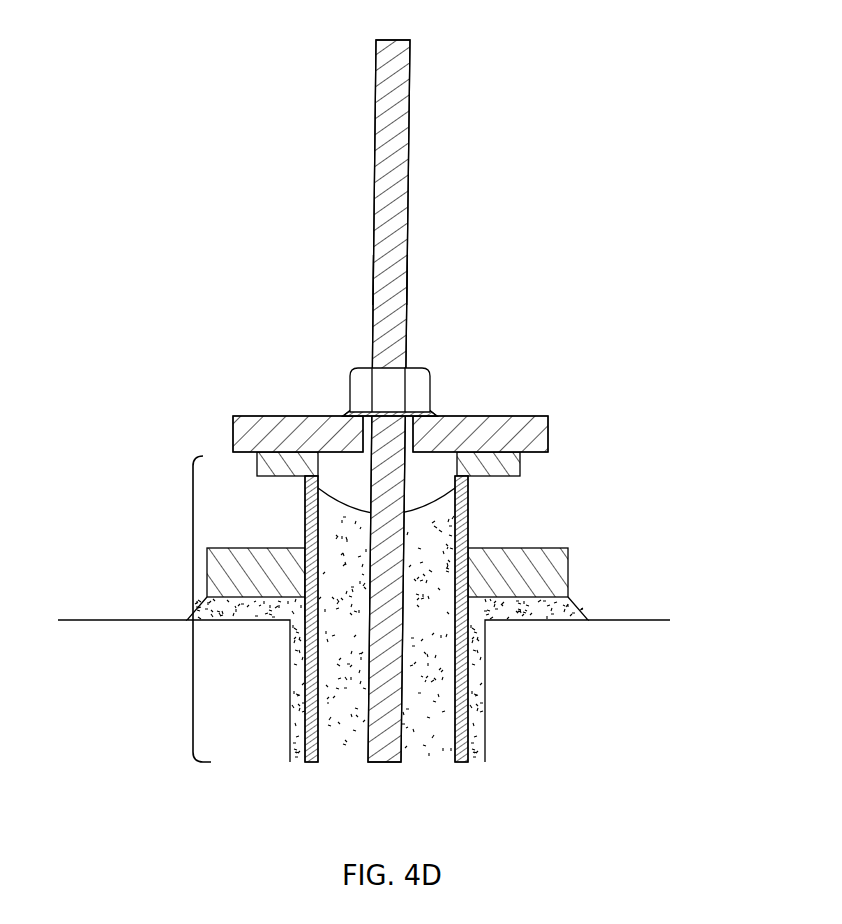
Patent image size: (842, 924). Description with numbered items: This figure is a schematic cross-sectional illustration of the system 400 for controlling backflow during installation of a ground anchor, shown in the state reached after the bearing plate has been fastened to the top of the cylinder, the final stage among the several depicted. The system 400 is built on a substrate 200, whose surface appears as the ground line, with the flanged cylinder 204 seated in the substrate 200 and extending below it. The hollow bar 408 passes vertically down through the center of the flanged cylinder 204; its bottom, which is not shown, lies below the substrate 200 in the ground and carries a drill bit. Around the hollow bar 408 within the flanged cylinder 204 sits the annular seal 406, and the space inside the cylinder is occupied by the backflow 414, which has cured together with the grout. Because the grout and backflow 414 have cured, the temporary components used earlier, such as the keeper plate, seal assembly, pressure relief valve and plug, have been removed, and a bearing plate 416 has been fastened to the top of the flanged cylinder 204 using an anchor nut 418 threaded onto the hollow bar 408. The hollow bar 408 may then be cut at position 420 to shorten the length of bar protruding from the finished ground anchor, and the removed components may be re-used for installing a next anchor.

The system 400 is at (165, 54).
The hollow bar 408 is at (392, 77).
The position 420 is at (374, 283).
The anchor nut 418 is at (363, 393).
The bearing plate 416 is at (238, 432).
The flanged cylinder 204 is at (193, 568).
The annular seal 406 is at (353, 532).
The backflow 414 is at (428, 671).
The substrate 200 is at (263, 698).